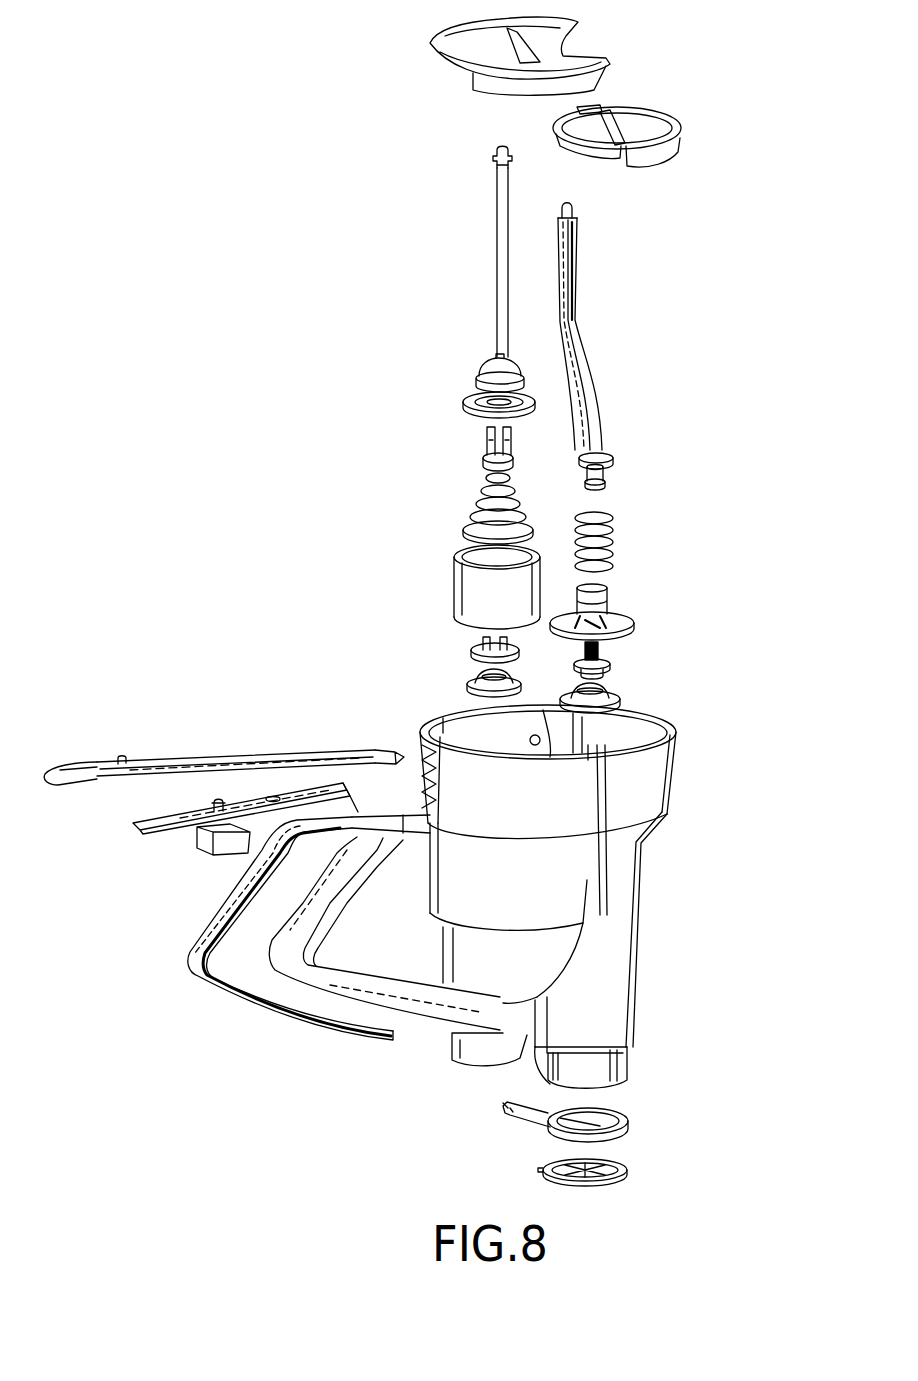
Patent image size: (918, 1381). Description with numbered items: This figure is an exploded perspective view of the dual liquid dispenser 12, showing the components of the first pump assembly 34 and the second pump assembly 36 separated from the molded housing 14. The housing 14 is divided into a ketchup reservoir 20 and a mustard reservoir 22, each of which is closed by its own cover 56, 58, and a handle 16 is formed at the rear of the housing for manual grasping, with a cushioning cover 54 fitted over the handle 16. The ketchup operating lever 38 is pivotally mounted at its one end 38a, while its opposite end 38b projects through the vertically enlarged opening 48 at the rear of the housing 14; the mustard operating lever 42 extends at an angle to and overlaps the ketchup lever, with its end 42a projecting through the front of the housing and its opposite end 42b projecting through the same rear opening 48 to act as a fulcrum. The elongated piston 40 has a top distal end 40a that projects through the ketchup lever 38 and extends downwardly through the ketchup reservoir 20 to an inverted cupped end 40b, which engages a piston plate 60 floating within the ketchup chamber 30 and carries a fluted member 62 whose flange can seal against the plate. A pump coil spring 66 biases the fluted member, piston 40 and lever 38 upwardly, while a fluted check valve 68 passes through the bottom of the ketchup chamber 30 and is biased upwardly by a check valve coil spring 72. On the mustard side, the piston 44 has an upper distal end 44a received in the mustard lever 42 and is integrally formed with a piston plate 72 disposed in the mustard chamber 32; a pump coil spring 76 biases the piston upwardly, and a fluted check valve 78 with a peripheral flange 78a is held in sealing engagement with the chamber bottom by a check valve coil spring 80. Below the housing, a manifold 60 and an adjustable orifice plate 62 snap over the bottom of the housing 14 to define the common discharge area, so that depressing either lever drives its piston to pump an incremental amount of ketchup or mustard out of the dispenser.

The dual liquid dispenser 12 is at (710, 562).
The housing 14 is at (546, 889).
The handle 16 is at (330, 983).
The ketchup reservoir 20 is at (546, 802).
The mustard reservoir 22 is at (632, 733).
The ketchup chamber 30 is at (467, 592).
The mustard chamber 32 is at (607, 602).
The first pump assembly 34 is at (448, 544).
The second pump assembly 36 is at (665, 624).
The ketchup operating lever 38 is at (236, 849).
The end of ketchup lever 38a is at (352, 795).
The opposite end of ketchup lever 38b is at (143, 829).
The piston 40 is at (451, 251).
The top distal end of piston 40a is at (492, 157).
The inverted cupped end 40b is at (490, 372).
The mustard operating lever 42 is at (224, 737).
The end of mustard lever 42a is at (376, 752).
The opposite end of mustard lever 42b is at (66, 766).
The piston 44 is at (616, 332).
The upper distal end of piston 44a is at (574, 215).
The vertically enlarged opening 48 is at (438, 797).
The cushioning cover 54 is at (207, 983).
The cover 56 is at (462, 46).
The cover 58 is at (660, 123).
The manifold 60 is at (468, 407).
The adjustable orifice plate 62 is at (487, 446).
The pump coil spring 66 is at (466, 513).
The fluted check valve 68 is at (473, 650).
The check valve coil spring 72 is at (610, 480).
The pump coil spring 76 is at (614, 555).
The fluted check valve 78 is at (660, 666).
The peripheral flange 78a is at (607, 665).
The check valve coil spring 80 is at (621, 700).